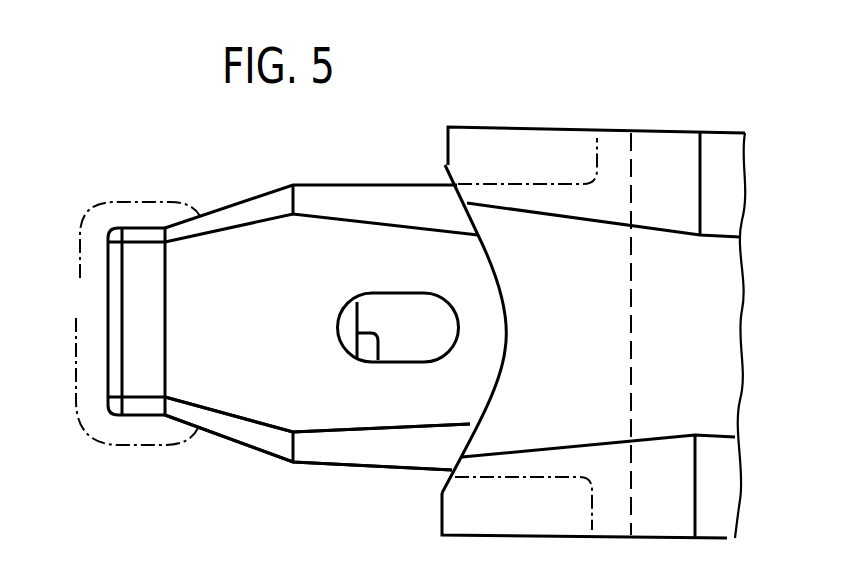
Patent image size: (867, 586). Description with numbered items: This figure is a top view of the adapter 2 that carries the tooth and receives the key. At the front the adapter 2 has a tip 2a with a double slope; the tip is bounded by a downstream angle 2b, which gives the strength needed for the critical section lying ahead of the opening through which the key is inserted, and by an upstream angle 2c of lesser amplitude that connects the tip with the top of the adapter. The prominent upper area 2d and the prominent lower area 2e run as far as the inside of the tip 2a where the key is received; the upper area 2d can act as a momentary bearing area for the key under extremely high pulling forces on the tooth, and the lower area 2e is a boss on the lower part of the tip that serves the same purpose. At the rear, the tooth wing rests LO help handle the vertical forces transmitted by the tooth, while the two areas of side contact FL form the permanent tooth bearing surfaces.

The adapter 2 is at (350, 185).
The tip 2a is at (148, 303).
The downstream angle 2b is at (273, 353).
The upstream angle 2c is at (408, 362).
The prominent upper area 2d is at (353, 323).
The prominent lower area 2e is at (370, 347).
The tooth wing rests LO is at (522, 148).
The areas of side contact FL is at (127, 323).